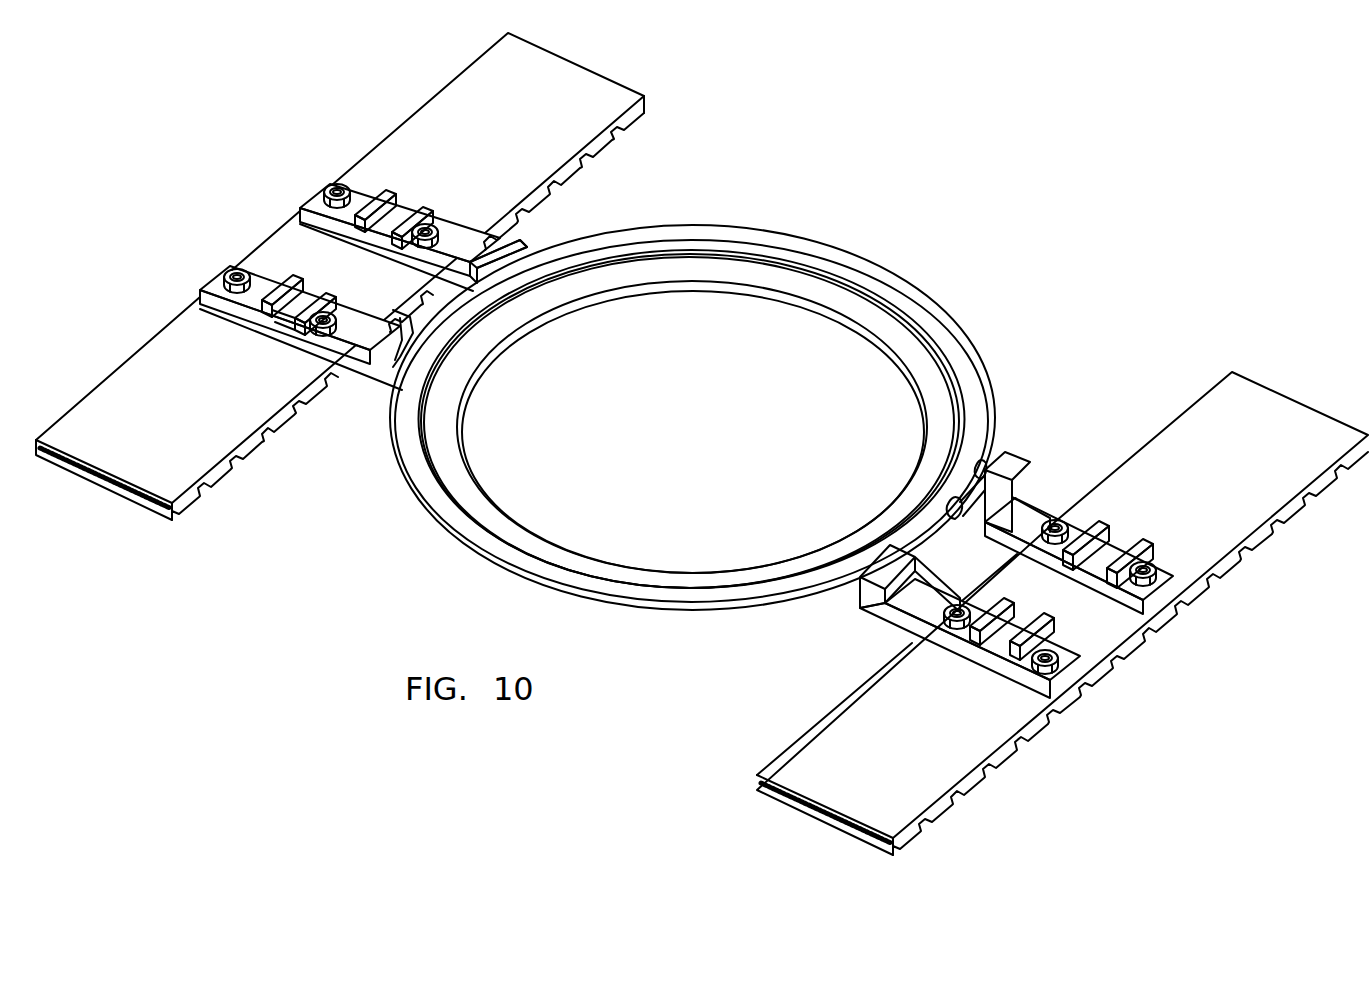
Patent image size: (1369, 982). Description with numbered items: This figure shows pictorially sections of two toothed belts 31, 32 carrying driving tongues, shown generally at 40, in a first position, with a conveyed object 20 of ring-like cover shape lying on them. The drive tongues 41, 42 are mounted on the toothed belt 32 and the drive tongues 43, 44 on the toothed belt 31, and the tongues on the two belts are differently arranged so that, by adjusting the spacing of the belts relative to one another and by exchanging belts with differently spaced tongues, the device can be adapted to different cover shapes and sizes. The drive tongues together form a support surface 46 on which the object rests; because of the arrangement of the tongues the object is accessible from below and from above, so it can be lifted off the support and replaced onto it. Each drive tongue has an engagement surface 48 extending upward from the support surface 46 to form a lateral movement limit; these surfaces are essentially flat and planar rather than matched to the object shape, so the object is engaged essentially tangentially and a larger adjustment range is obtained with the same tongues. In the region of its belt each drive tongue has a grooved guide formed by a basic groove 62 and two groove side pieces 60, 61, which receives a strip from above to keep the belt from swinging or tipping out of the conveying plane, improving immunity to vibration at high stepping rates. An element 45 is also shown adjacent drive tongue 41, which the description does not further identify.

The ring 20 is at (780, 245).
The toothed belt 31 is at (790, 765).
The toothed belt 32 is at (168, 486).
The driving tongues 40 is at (311, 183).
The drive tongue 41 is at (298, 293).
The drive tongue 42 is at (669, 325).
The drive tongue 43 is at (970, 586).
The drive tongue 44 is at (1030, 514).
The nut 45 is at (228, 268).
The support surface 46 is at (957, 520).
The engagement surface 48 is at (520, 252).
The groove side piece 60 is at (272, 272).
The groove side piece 61 is at (290, 325).
The basic groove 62 is at (272, 315).